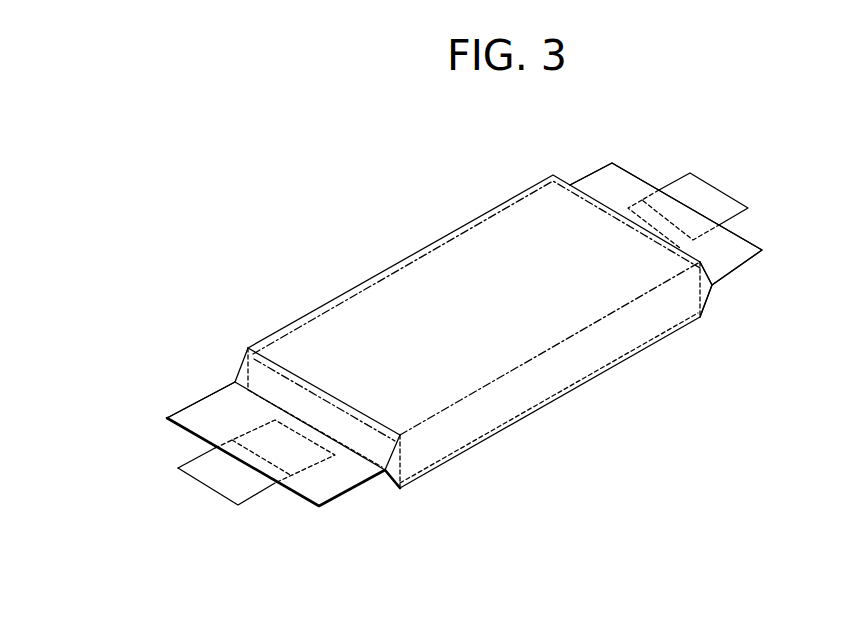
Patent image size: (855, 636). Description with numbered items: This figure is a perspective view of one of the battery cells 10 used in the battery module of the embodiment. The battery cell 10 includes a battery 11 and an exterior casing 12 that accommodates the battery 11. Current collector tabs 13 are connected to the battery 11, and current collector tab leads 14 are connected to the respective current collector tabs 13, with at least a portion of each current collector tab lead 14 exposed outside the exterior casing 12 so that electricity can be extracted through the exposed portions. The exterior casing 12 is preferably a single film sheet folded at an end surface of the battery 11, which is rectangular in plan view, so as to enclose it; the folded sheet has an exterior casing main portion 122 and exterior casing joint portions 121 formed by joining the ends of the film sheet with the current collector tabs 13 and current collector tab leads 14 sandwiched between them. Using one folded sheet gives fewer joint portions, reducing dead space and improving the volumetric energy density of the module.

The battery cell 10 is at (332, 210).
The battery 11 is at (443, 267).
The exterior casing 12 is at (712, 293).
The exterior casing joint portion 121 is at (325, 479).
The exterior casing main portion 122 is at (470, 358).
The current collector tab 13 is at (270, 430).
The current collector tab lead 14 is at (223, 476).